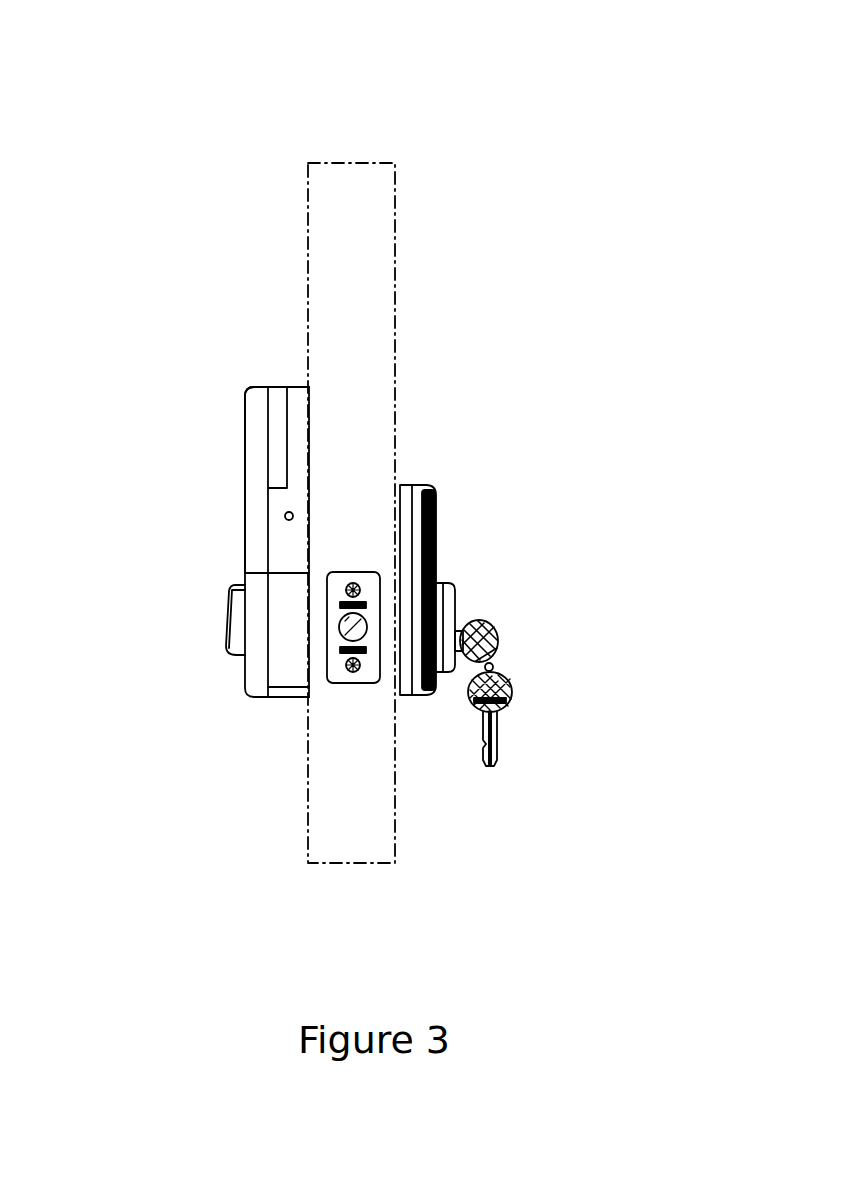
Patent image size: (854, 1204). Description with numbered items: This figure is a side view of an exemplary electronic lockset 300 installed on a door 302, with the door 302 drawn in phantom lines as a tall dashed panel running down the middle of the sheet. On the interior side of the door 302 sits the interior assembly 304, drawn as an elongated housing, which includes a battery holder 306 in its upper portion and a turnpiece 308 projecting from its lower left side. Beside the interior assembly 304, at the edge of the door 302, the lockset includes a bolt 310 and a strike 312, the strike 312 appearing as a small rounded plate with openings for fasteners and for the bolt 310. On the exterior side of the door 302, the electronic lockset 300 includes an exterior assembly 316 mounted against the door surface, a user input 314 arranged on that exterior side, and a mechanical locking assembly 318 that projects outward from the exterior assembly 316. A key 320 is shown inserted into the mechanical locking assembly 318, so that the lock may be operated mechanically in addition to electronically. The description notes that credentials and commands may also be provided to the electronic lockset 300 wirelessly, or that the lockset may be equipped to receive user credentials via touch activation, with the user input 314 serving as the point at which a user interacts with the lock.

The electronic lockset 300 is at (546, 37).
The door 302 is at (345, 161).
The interior assembly 304 is at (203, 416).
The battery holder 306 is at (245, 438).
The turnpiece 308 is at (225, 618).
The bolt 310 is at (327, 652).
The strike 312 is at (345, 684).
The user input 314 is at (470, 530).
The exterior assembly 316 is at (532, 504).
The mechanical locking assembly 318 is at (512, 600).
The key 320 is at (502, 628).